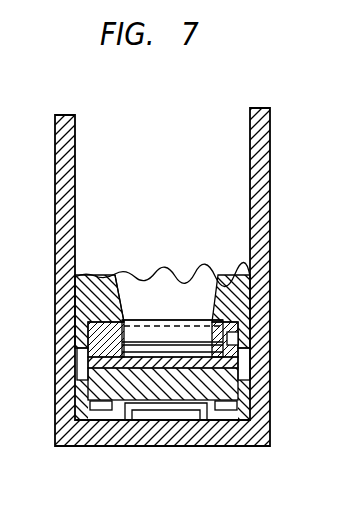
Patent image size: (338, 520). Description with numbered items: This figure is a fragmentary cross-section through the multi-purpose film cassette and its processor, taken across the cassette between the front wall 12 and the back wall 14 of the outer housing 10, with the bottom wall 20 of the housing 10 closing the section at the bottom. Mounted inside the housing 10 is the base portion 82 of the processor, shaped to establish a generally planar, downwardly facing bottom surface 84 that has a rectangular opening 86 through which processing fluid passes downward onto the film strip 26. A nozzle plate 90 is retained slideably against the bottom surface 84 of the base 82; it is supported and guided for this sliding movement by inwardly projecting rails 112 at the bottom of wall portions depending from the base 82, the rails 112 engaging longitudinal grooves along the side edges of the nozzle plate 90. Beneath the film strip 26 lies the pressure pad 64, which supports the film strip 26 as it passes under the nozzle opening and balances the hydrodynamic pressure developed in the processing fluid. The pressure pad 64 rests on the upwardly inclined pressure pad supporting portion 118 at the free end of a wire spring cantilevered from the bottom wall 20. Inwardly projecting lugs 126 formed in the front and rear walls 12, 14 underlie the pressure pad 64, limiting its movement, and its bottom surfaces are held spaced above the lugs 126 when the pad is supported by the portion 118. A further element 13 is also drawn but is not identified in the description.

The outer housing 10 is at (3, 247).
The front wall 12 is at (58, 212).
The housing portion 13 is at (330, 412).
The back wall 14 is at (270, 166).
The bottom wall 20 is at (100, 447).
The film strip 26 is at (173, 362).
The pressure pad 64 is at (240, 383).
The base portion 82 is at (90, 272).
The bottom surface 84 is at (128, 310).
The rectangular opening 86 is at (163, 320).
The nozzle plate 90 is at (222, 351).
The rails 112 is at (80, 335).
The pressure pad supporting portion 118 is at (170, 402).
The lugs 126 is at (95, 400).